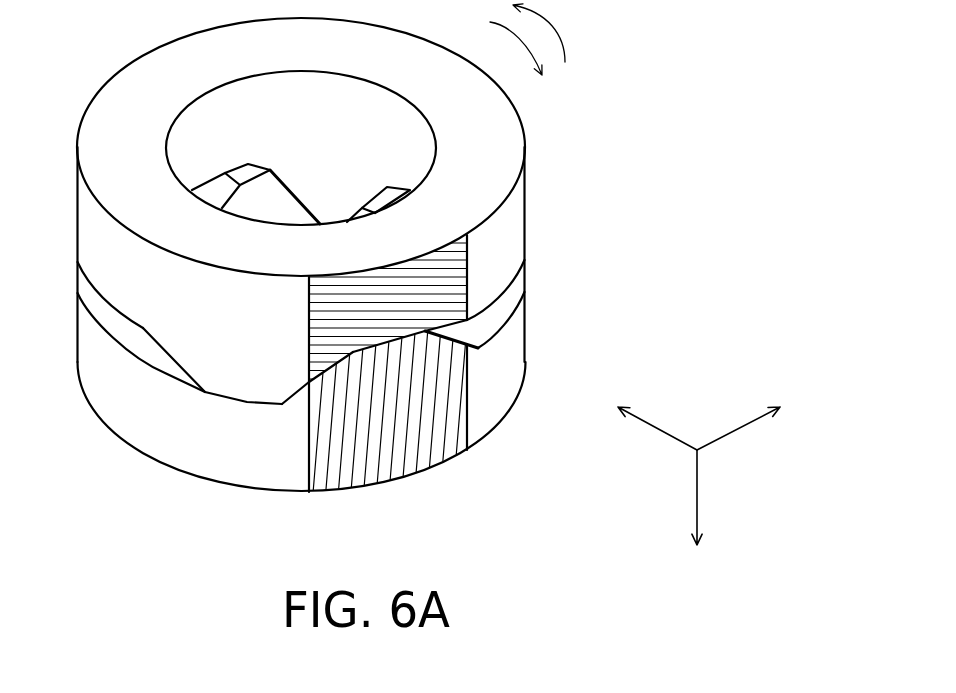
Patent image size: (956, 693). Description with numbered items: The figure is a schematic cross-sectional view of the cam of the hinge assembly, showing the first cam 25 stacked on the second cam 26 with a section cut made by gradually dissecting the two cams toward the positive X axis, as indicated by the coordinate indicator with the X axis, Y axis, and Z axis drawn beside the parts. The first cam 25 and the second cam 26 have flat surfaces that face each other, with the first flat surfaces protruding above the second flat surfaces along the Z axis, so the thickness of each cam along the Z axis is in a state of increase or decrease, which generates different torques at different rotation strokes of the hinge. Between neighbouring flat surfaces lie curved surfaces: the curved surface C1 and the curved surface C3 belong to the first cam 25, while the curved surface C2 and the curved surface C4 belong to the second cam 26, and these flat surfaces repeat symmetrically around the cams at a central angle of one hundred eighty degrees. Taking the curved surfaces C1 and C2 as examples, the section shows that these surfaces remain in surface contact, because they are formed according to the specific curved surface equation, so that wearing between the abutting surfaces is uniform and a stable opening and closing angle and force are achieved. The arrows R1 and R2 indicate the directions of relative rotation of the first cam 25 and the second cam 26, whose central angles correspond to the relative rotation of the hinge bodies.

The first cam 25 is at (562, 202).
The second cam 26 is at (562, 320).
The curved surface C1 is at (326, 387).
The curved surface C2 is at (336, 354).
The curved surface C3 is at (167, 366).
The curved surface C4 is at (474, 337).
The first rotation direction R1 is at (547, 33).
The second rotation direction R2 is at (516, 48).
The X axis X is at (647, 418).
The Y axis Y is at (747, 418).
The Z axis Z is at (696, 516).